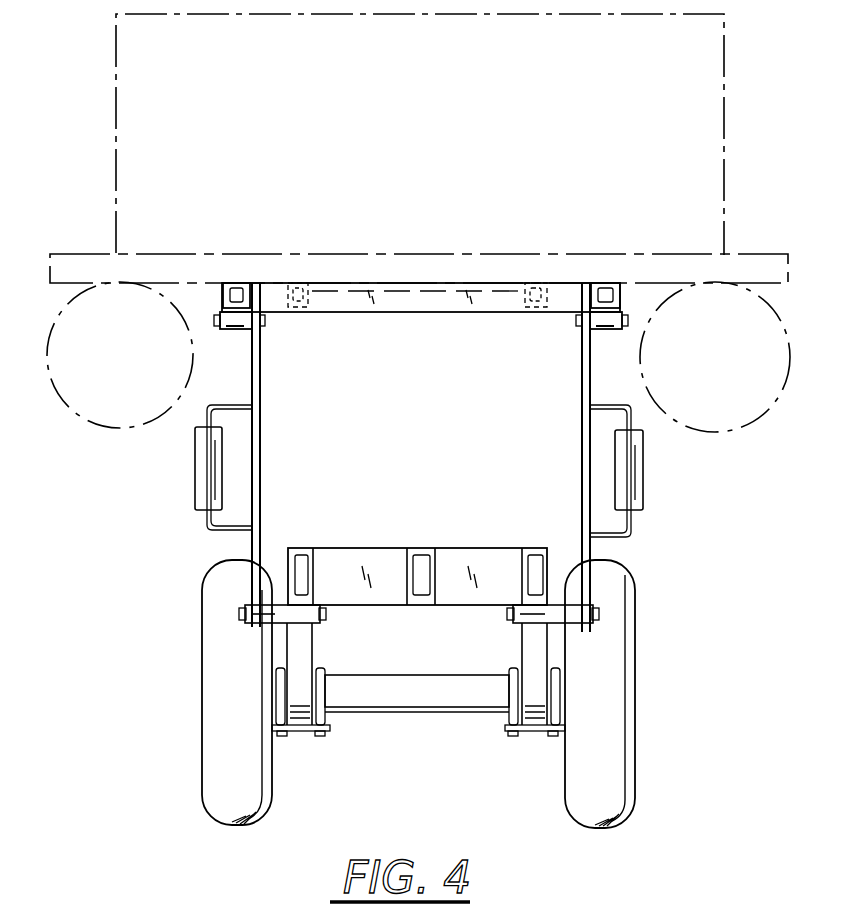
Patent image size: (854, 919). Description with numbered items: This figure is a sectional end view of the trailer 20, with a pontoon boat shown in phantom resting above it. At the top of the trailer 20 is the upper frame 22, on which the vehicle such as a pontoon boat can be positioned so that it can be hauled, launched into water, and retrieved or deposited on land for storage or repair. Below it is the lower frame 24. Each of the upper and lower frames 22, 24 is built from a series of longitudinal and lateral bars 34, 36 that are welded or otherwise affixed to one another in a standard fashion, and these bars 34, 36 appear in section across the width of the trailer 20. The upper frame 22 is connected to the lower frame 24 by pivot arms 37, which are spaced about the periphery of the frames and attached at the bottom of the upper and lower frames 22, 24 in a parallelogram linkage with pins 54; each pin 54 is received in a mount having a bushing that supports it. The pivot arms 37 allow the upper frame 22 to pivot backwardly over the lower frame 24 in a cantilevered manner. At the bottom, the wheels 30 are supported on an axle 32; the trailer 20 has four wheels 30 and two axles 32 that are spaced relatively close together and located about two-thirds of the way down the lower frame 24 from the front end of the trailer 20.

The trailer 20 is at (145, 481).
The upper frame 22 is at (404, 313).
The lower frame 24 is at (369, 536).
The wheels 30 is at (215, 766).
The axle 32 is at (435, 700).
The longitudinal bars 34 is at (226, 300).
The lateral bars 36 is at (470, 313).
The pivot arms 37 is at (260, 390).
The pins 54 is at (226, 330).